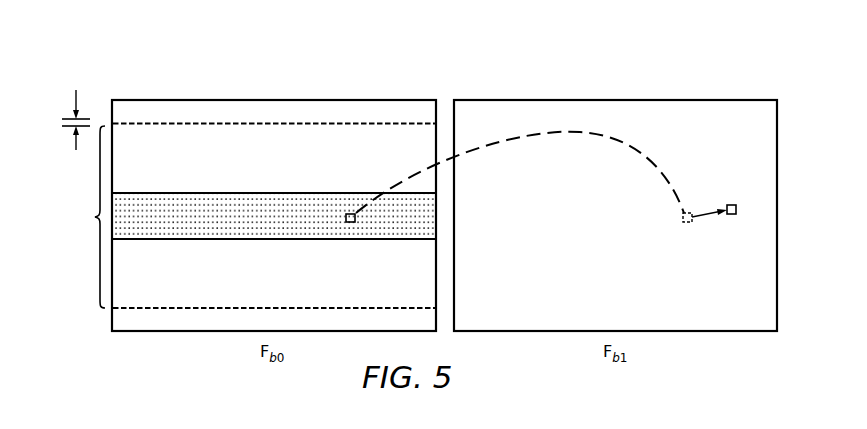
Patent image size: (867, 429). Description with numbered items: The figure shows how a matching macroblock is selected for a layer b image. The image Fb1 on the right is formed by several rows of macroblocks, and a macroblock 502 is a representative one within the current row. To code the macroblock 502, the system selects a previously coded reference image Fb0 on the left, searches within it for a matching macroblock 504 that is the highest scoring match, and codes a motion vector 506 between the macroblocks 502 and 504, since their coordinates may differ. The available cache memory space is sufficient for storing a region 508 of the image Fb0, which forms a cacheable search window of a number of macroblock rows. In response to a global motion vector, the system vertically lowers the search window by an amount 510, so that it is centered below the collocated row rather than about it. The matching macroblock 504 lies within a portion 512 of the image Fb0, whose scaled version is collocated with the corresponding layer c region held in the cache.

The macroblock 502 is at (729, 205).
The matching macroblock 504 is at (351, 222).
The motion vector 506 is at (708, 215).
The region 508 is at (81, 217).
The amount 510 is at (61, 119).
The portion 512 is at (195, 240).